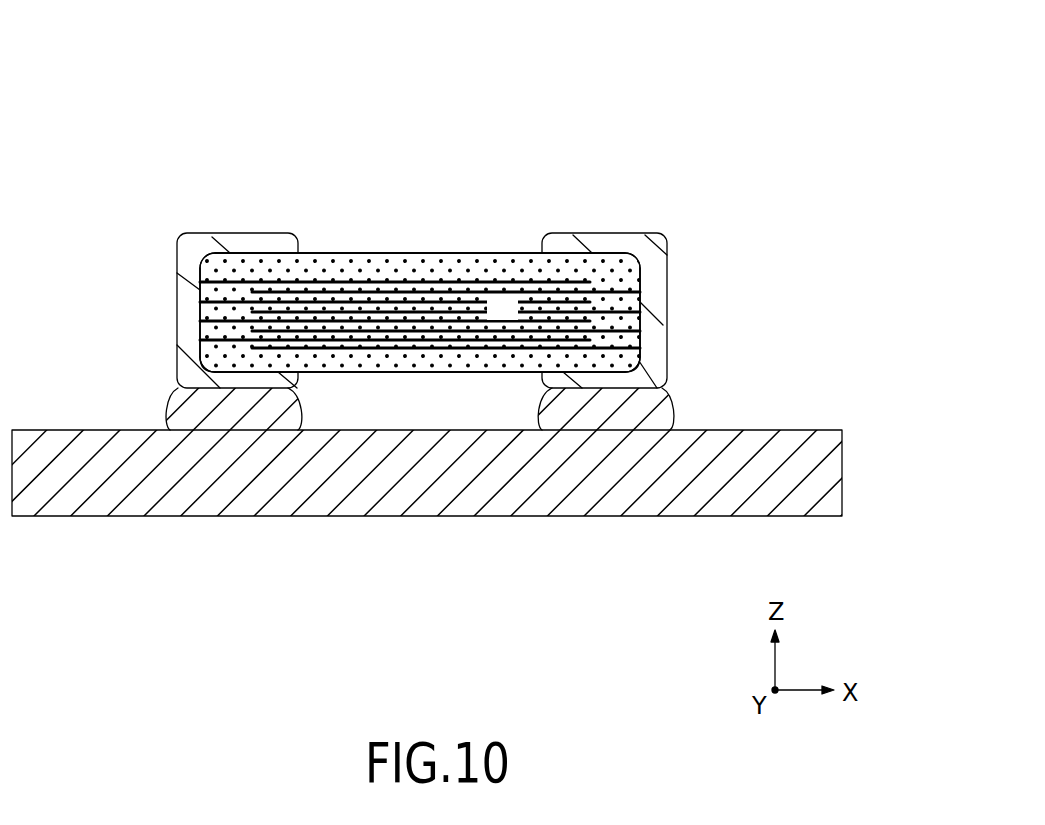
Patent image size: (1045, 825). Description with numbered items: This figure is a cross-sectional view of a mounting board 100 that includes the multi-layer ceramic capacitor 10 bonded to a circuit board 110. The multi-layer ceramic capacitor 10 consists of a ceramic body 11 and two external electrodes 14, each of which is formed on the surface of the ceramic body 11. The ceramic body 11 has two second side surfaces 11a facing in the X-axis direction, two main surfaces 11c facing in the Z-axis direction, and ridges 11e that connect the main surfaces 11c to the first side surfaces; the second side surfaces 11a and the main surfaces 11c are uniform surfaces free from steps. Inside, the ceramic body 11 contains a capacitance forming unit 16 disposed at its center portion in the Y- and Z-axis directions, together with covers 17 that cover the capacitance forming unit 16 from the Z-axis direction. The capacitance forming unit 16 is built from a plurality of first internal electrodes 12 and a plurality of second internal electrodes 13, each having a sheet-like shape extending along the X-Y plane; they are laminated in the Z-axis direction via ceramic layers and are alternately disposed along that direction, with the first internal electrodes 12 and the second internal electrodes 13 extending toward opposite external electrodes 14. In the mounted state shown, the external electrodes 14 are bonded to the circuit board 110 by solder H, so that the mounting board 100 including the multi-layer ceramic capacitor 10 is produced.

The mounting board 100 is at (651, 109).
The multi-layer ceramic capacitor 10 is at (222, 205).
The ceramic body 11 is at (304, 241).
The second side surfaces 11a is at (200, 308).
The main surfaces 11c is at (517, 252).
The ridges 11e is at (210, 367).
The first internal electrodes 12 is at (372, 282).
The second internal electrodes 13 is at (447, 292).
The external electrodes 14 is at (198, 240).
The capacitance forming unit 16 is at (502, 307).
The covers 17 is at (485, 260).
The circuit board 110 is at (185, 518).
The solder H is at (167, 425).